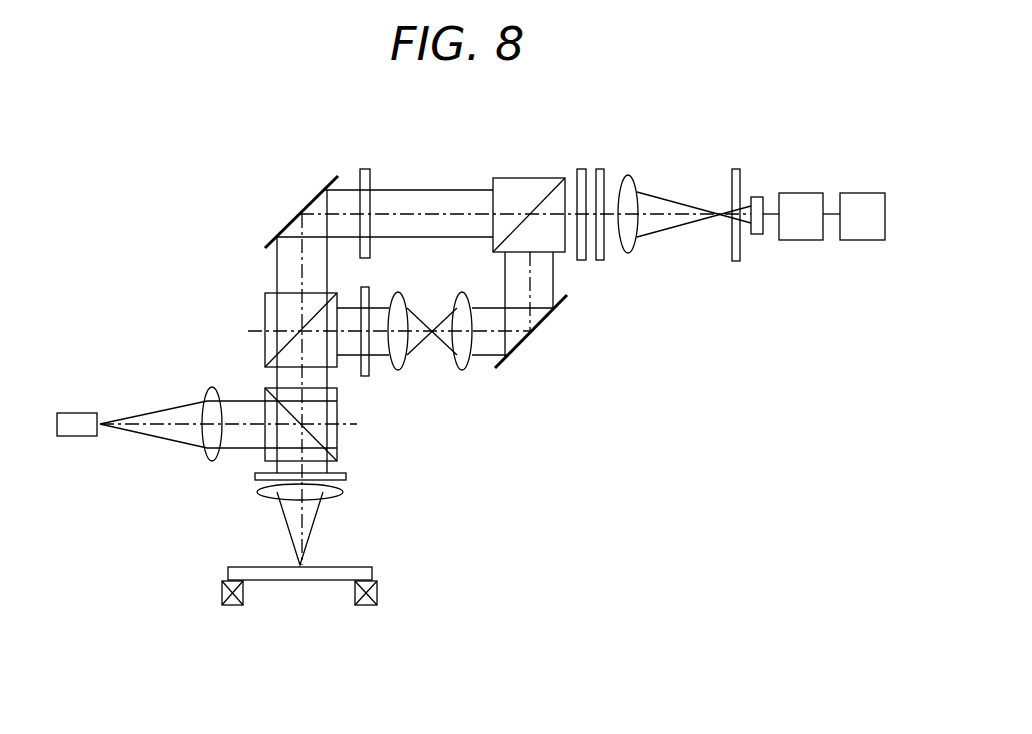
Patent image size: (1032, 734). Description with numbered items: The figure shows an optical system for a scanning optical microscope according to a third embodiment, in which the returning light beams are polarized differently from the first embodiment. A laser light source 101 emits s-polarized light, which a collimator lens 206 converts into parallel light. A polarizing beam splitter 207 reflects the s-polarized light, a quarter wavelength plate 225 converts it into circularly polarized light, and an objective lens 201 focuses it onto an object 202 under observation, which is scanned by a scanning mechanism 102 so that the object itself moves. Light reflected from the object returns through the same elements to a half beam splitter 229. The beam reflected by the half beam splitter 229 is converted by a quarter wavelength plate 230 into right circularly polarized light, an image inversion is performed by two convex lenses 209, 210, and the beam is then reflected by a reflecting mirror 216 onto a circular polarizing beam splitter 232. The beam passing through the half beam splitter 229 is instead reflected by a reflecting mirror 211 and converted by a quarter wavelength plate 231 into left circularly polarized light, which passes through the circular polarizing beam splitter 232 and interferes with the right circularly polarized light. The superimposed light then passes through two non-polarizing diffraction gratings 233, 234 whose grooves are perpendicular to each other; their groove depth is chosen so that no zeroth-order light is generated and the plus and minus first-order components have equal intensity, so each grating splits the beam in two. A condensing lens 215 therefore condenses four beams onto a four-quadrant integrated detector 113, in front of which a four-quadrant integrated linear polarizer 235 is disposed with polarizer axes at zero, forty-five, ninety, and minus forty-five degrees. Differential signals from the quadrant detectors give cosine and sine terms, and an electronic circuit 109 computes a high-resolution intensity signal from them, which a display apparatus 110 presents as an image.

The laser light source 101 is at (84, 412).
The scanning mechanism 102 is at (378, 590).
The electronic circuit 109 is at (812, 192).
The display apparatus 110 is at (870, 192).
The four-quadrant integrated detector 113 is at (758, 196).
The objective lens 201 is at (260, 497).
The object under observation 202 is at (363, 566).
The collimator lens 206 is at (211, 387).
The polarizing beam splitter 207 is at (338, 440).
The convex lens 209 is at (398, 371).
The convex lens 210 is at (462, 371).
The reflecting mirror 211 is at (283, 228).
The condensing lens 215 is at (632, 177).
The reflecting mirror 216 is at (540, 330).
The quarter wavelength plate 225 is at (255, 475).
The half beam splitter 229 is at (265, 305).
The quarter wavelength plate 230 is at (365, 286).
The quarter wavelength plate 231 is at (365, 168).
The circular polarizing beam splitter 232 is at (497, 177).
The non-polarizing diffraction grating 233 is at (581, 168).
The non-polarizing diffraction grating 234 is at (600, 168).
The four-quadrant integrated linear polarizer 235 is at (736, 168).